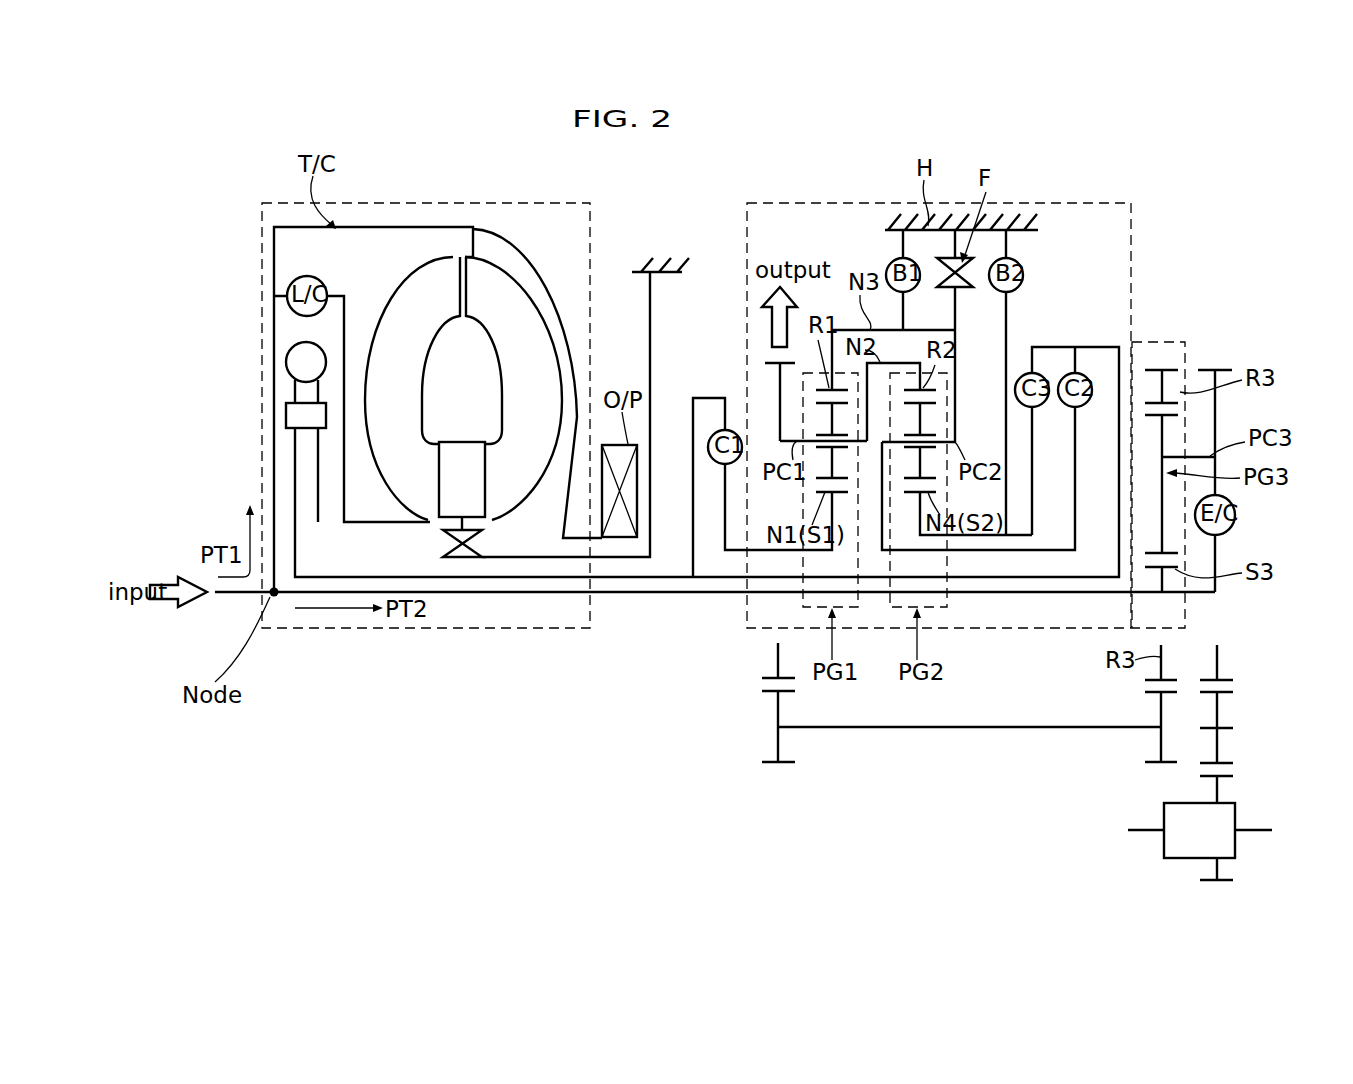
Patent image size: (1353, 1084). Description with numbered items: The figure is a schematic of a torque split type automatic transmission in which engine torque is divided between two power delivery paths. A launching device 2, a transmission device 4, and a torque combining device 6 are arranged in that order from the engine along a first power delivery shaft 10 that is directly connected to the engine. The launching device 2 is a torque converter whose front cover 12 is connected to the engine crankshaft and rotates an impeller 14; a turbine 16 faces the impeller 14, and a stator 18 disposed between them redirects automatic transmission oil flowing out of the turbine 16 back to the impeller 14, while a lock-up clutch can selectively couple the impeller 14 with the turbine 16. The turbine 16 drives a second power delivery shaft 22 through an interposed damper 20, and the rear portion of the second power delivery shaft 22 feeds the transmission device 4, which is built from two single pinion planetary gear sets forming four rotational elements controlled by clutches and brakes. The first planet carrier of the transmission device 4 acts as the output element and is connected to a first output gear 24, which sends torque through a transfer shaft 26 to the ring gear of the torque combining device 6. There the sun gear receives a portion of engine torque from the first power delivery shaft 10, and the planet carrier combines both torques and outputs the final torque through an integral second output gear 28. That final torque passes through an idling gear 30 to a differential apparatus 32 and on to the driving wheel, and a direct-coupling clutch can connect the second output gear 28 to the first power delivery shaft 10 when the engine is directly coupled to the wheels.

The launching device 2 is at (305, 640).
The transmission device 4 is at (1146, 228).
The torque combining device 6 is at (1193, 344).
The first power delivery shaft 10 is at (620, 596).
The front cover 12 is at (272, 390).
The impeller 14 is at (500, 298).
The turbine 16 is at (427, 292).
The stator 18 is at (448, 496).
The damper 20 is at (300, 360).
The second power delivery shaft 22 is at (505, 580).
The first output gear 24 is at (766, 368).
The transfer shaft 26 is at (908, 736).
The second output gear 28 is at (1218, 405).
The idling gear 30 is at (1220, 745).
The differential apparatus 32 is at (1236, 808).